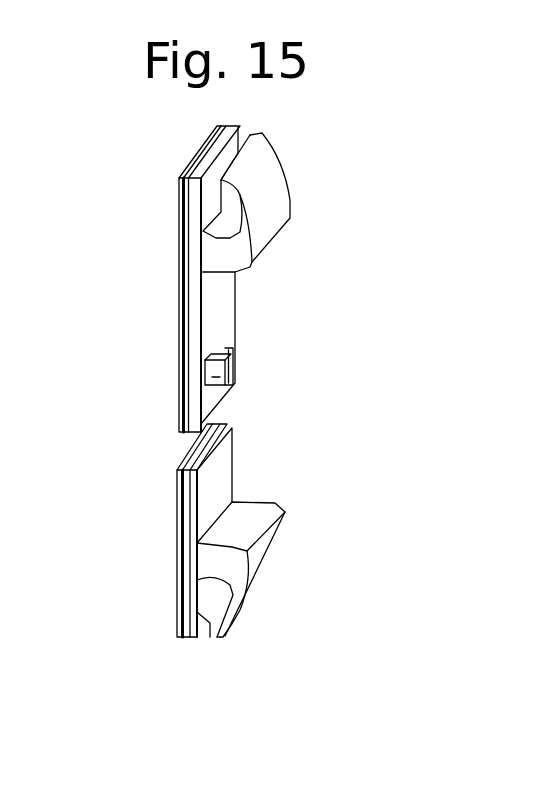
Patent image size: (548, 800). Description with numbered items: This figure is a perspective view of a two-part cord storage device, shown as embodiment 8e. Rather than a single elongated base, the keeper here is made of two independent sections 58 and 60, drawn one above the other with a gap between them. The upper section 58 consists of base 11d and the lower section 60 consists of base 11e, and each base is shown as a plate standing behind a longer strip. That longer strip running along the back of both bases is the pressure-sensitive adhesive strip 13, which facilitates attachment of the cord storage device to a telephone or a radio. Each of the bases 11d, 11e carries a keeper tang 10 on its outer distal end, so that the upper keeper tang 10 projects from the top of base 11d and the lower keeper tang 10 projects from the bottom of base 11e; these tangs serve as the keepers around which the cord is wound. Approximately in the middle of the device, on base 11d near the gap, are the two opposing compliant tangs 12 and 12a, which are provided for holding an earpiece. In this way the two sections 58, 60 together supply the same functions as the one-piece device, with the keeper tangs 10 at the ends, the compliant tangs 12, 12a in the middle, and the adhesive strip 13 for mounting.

The pressure-sensitive adhesive strip 13 is at (180, 260).
The base 11d is at (223, 312).
The base 11e is at (220, 483).
The keeper tang 10 is at (267, 218).
The compliant tang 12 is at (236, 383).
The compliant tang 12a is at (236, 364).
The independent section 58 is at (305, 161).
The embodiment 8e is at (100, 396).
The independent section 60 is at (333, 528).